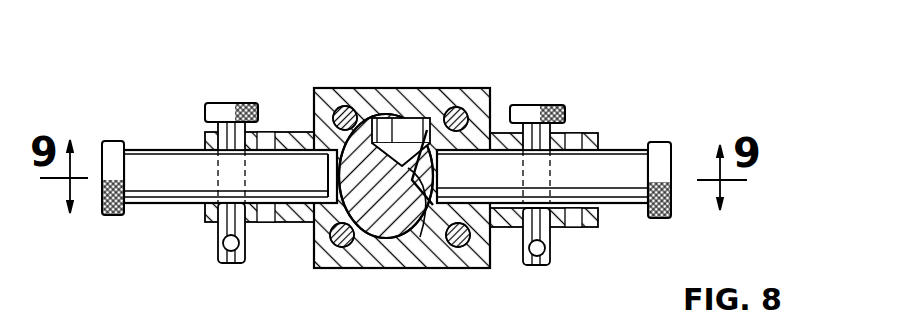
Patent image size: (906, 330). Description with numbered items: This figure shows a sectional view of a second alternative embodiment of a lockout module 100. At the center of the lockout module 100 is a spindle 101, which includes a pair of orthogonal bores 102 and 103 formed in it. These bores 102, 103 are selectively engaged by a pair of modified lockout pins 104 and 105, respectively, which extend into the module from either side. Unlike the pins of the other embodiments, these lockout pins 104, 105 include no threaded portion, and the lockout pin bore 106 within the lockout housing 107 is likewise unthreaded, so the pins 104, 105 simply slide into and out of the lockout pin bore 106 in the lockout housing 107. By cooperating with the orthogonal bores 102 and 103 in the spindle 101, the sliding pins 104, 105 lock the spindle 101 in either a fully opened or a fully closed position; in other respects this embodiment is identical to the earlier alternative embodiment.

The lockout module 100 is at (395, 182).
The spindle 101 is at (382, 215).
The bore 102 is at (402, 125).
The bore 103 is at (428, 195).
The lockout pin 104 is at (152, 205).
The lockout pin 105 is at (633, 146).
The lockout pin bore 106 is at (600, 210).
The lockout housing 107 is at (493, 68).